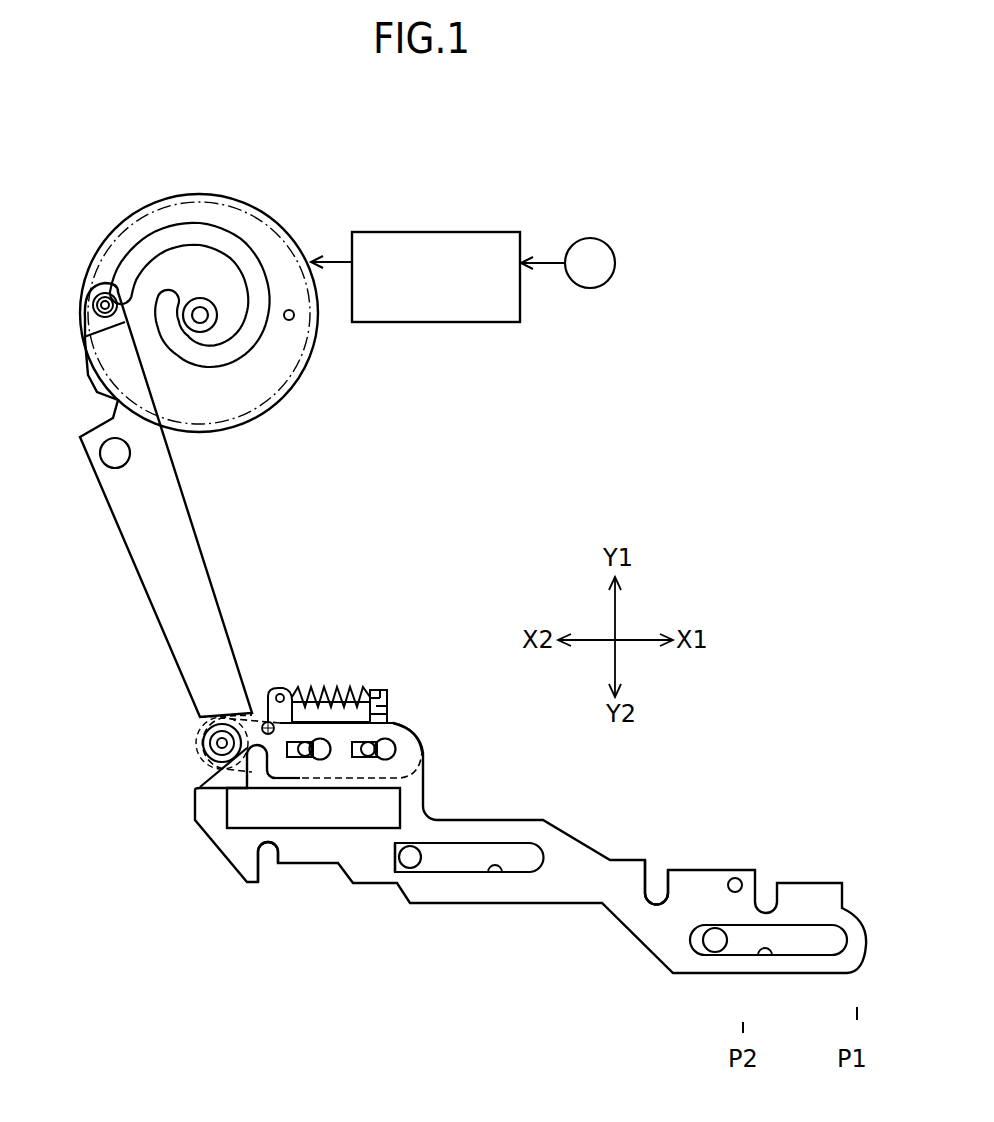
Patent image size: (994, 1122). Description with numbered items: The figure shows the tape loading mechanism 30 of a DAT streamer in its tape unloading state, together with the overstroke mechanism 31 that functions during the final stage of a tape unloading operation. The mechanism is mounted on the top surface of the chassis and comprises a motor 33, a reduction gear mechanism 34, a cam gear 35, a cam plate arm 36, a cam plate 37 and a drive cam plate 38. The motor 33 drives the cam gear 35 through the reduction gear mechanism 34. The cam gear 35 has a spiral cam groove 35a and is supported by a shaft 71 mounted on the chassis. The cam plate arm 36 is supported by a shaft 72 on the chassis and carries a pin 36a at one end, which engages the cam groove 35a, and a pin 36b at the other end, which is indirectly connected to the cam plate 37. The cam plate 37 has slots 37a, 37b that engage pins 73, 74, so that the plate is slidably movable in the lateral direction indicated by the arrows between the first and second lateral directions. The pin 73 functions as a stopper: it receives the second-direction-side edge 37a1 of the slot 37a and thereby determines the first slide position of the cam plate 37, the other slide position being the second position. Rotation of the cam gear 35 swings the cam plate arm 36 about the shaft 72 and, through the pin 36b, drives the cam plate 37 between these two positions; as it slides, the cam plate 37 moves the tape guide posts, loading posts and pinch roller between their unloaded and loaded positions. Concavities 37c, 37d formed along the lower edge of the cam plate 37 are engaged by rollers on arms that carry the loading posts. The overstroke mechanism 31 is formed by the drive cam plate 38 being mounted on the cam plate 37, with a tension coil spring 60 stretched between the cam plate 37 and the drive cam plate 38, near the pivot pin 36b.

The tape loading mechanism 30 is at (558, 122).
The overstroke mechanism 31 is at (292, 648).
The motor 33 is at (608, 243).
The reduction gear mechanism 34 is at (457, 231).
The cam gear 35 is at (256, 208).
The cam groove 35a is at (180, 221).
The cam plate arm 36 is at (148, 573).
The pin 36a is at (98, 293).
The pin 36b is at (210, 743).
The cam plate 37 is at (623, 917).
The slot 37a is at (497, 872).
The X2-side edge 37a1 is at (395, 858).
The slot 37b is at (768, 955).
The concavity 37c is at (268, 862).
The concavity 37d is at (660, 890).
The drive cam plate 38 is at (405, 727).
The tension coil spring 60 is at (328, 690).
The shaft 71 is at (200, 298).
The shaft 72 is at (122, 452).
The pin 73 is at (405, 877).
The pin 74 is at (714, 950).